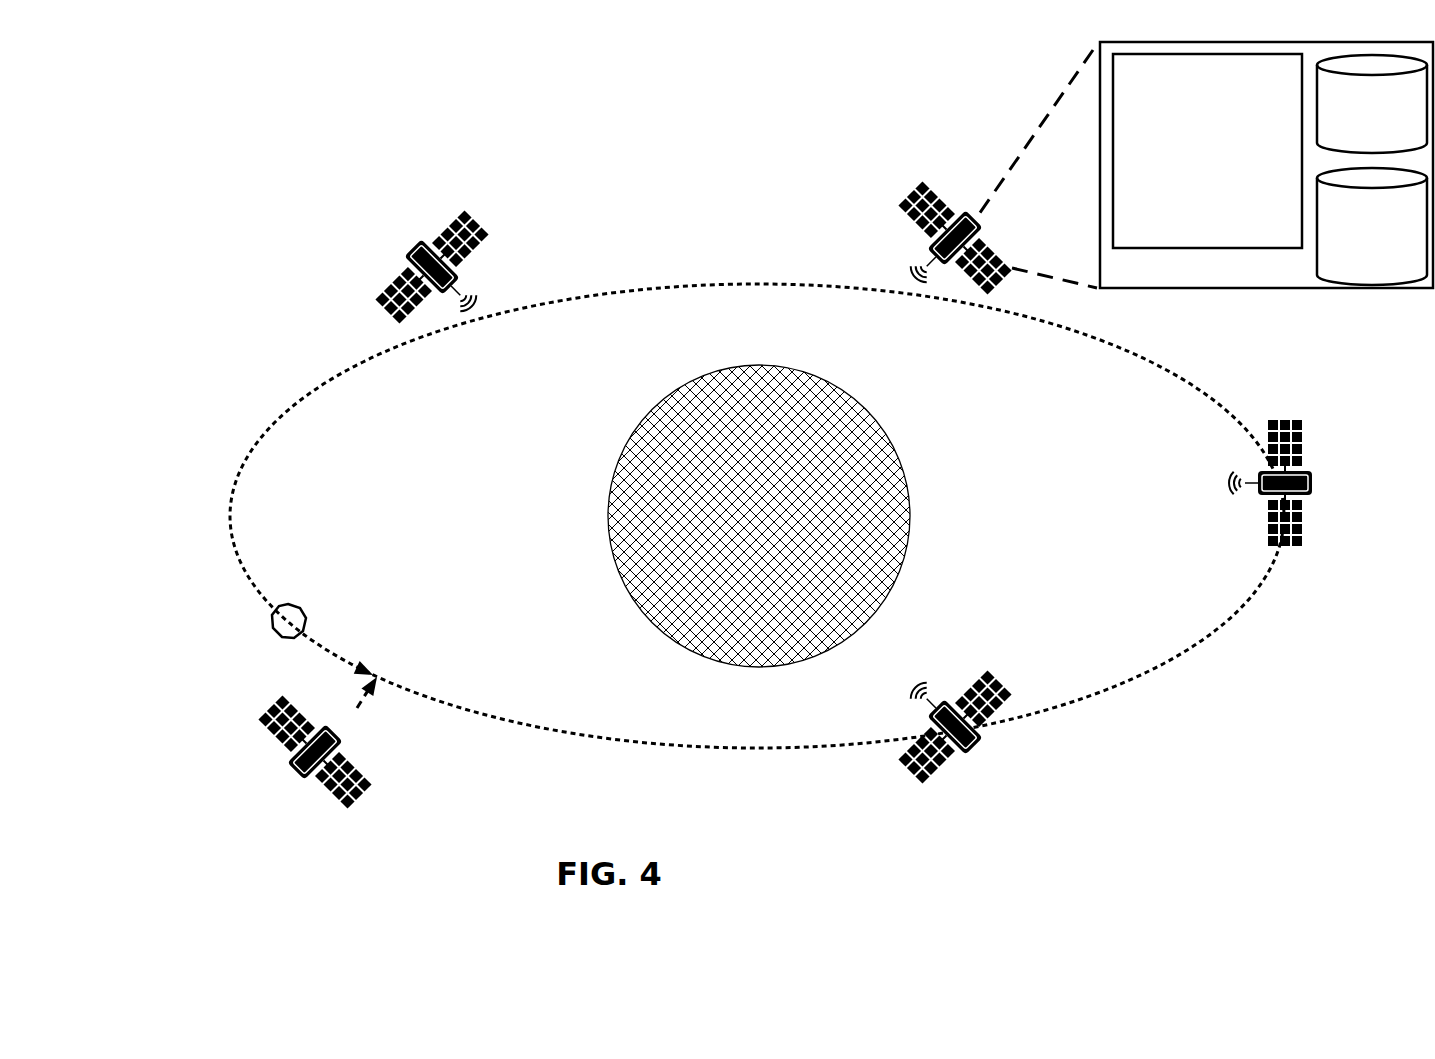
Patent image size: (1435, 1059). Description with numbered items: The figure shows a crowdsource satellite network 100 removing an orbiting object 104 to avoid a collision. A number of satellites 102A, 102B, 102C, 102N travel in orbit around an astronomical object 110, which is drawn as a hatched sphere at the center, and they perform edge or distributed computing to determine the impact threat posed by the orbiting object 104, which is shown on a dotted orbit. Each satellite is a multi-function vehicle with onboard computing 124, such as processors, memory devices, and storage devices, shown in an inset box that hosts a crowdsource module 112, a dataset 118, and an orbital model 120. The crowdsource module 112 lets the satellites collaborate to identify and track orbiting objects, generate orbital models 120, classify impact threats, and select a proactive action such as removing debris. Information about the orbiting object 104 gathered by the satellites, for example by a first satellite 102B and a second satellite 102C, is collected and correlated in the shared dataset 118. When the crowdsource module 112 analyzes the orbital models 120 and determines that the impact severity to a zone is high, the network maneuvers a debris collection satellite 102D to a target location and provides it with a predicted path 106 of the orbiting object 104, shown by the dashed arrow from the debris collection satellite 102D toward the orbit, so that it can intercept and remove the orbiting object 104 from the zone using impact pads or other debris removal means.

The crowdsource satellite network 100 is at (722, 103).
The satellite 102A is at (962, 216).
The first satellite 102B is at (421, 247).
The second satellite 102C is at (1313, 489).
The satellite 102N is at (981, 740).
The debris collection satellite 102D is at (292, 766).
The orbiting object 104 is at (290, 606).
The predicted path 106 is at (230, 518).
The astronomical object 110 is at (759, 516).
The crowdsource module 112 is at (1207, 151).
The dataset 118 is at (1372, 104).
The orbital model 120 is at (1372, 226).
The onboard computing 124 is at (1266, 165).